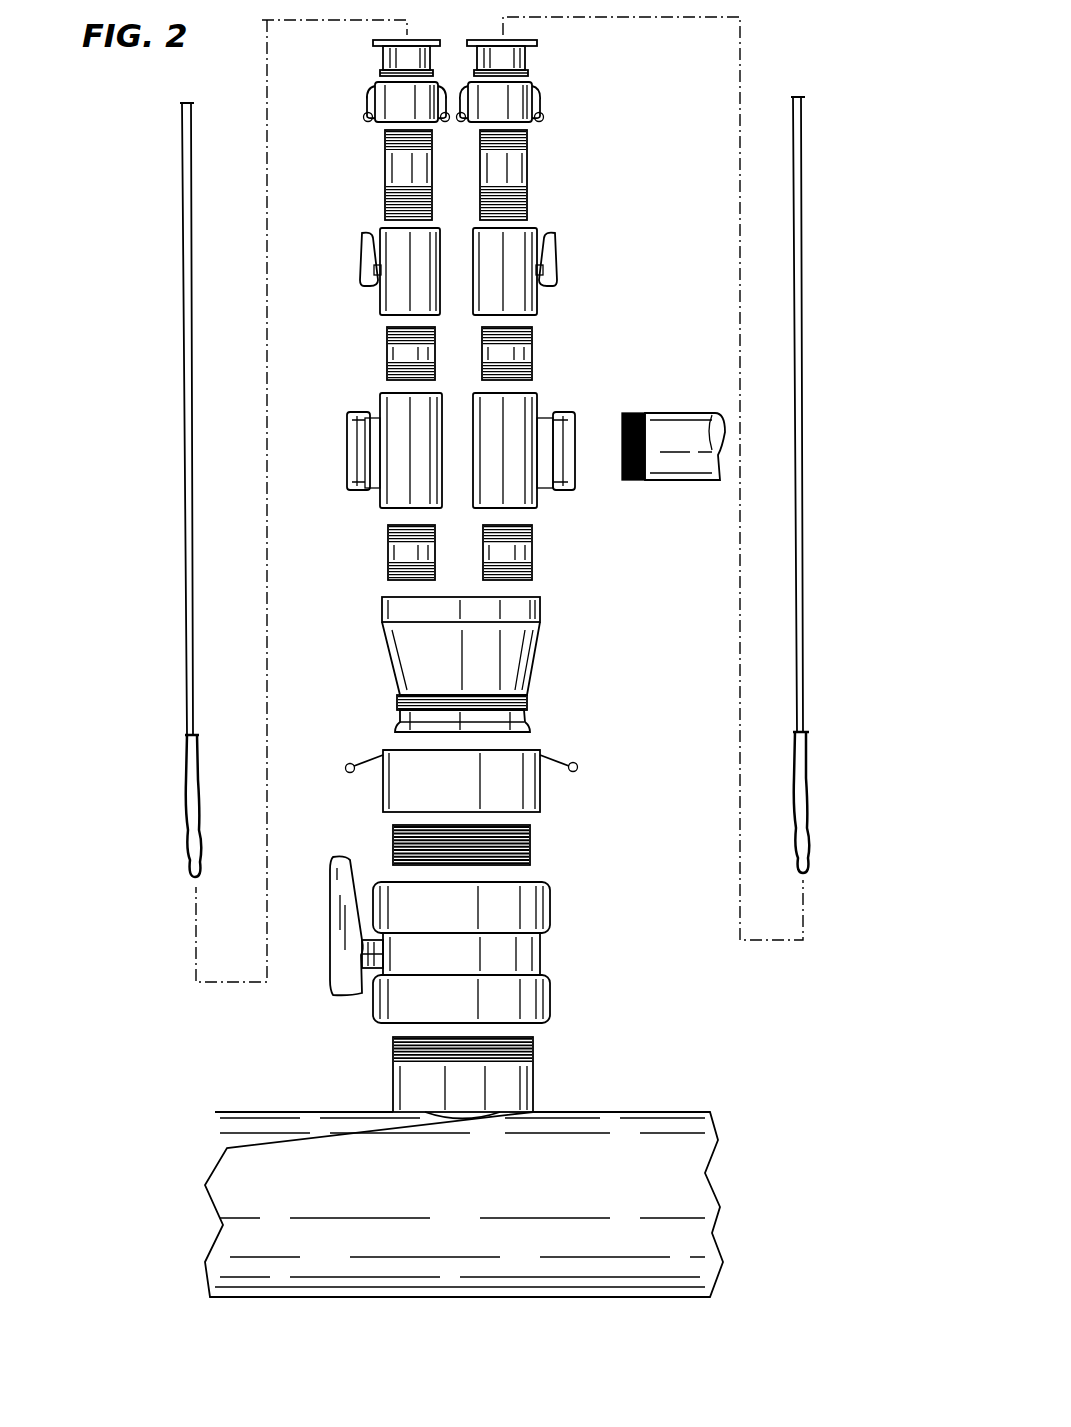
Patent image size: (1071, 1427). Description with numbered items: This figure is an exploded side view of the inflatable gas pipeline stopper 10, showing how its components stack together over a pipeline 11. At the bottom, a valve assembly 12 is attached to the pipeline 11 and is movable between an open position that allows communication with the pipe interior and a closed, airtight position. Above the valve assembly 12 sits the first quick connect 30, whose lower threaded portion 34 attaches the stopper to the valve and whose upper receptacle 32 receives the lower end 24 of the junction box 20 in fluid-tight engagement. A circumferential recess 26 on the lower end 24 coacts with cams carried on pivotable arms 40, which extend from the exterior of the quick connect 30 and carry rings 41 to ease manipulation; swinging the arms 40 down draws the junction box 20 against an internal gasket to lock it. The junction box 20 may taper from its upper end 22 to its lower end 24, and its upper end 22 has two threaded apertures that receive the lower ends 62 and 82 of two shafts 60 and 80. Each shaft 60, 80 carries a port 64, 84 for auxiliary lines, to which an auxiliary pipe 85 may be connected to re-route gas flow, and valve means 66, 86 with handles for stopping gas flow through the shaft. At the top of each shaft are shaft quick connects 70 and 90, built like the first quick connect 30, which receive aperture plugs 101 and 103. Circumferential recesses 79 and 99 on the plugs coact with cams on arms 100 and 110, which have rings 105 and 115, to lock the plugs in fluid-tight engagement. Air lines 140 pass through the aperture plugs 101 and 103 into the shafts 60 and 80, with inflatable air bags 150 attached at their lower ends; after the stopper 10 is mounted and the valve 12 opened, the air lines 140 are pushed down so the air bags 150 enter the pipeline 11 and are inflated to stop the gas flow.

The gas pipeline stopper 10 is at (100, 281).
The pipeline 11 is at (621, 1111).
The valve assembly 12 is at (556, 963).
The junction box 20 is at (499, 646).
The upper end 22 is at (542, 598).
The lower end 24 is at (526, 730).
The circumferential recess 26 is at (536, 722).
The first quick connect 30 is at (562, 786).
The upper receptacle 32 is at (385, 751).
The lower threaded portion 34 is at (393, 846).
The arms 40 is at (360, 762).
The rings 41 is at (346, 770).
The shaft 60 is at (380, 337).
The lower end 62 is at (540, 553).
The port 64 is at (345, 431).
The valve means 66 is at (352, 272).
The shaft quick connect 70 is at (368, 96).
The circumferential recess 79 is at (380, 67).
The shaft 80 is at (545, 351).
The lower end 82 is at (383, 571).
The port 84 is at (561, 408).
The auxiliary pipe 85 is at (663, 412).
The valve means 86 is at (560, 272).
The shaft quick connect 90 is at (548, 98).
The circumferential recess 99 is at (530, 69).
The arm 100 is at (365, 110).
The aperture plug 101 is at (370, 42).
The aperture plug 103 is at (545, 41).
The ring 105 is at (370, 121).
The arm 110 is at (546, 110).
The ring 115 is at (545, 119).
The air lines 140 is at (181, 498).
The inflatable air bags 150 is at (187, 776).